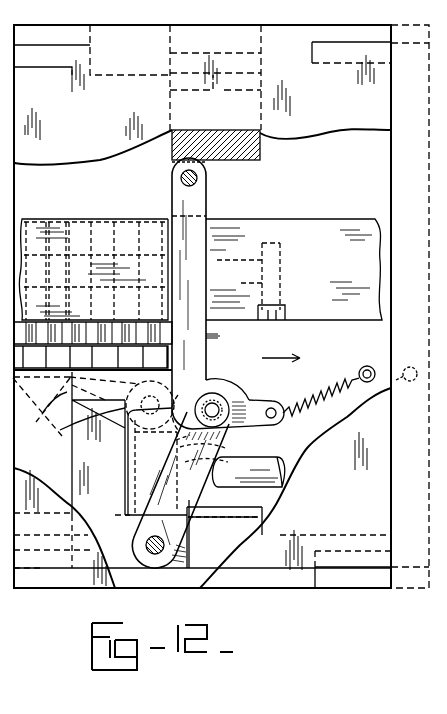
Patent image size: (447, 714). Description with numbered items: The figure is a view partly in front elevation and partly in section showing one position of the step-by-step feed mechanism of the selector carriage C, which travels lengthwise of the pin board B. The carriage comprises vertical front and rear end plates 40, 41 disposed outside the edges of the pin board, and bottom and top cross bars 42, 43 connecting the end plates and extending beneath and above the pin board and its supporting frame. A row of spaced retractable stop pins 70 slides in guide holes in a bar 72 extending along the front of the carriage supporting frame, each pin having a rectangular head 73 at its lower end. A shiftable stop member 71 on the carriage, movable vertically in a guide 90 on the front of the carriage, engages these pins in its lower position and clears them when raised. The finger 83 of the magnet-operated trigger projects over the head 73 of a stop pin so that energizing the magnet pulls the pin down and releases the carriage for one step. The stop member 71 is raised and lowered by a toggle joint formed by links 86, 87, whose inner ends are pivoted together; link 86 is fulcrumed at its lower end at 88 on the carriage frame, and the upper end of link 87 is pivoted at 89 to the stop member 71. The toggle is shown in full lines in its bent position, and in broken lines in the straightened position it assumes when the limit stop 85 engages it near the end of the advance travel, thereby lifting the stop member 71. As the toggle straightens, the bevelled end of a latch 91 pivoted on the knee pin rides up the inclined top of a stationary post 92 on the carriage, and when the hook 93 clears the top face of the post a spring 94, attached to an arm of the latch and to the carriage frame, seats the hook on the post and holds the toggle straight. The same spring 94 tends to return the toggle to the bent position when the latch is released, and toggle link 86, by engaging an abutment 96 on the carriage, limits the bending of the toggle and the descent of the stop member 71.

The front end plate 40 is at (102, 160).
The rear end plate 41 is at (52, 176).
The bottom cross bar 42 is at (360, 590).
The top cross bar 43 is at (62, 42).
The stop pins 70 is at (50, 228).
The stop member 71 is at (182, 212).
The bar 72 is at (294, 269).
The head 73 is at (93, 346).
The finger 83 is at (220, 340).
The limit stop 85 is at (268, 466).
The toggle link 86 is at (228, 441).
The toggle link 87 is at (202, 282).
The fulcrum 88 is at (156, 555).
The pivot 89 is at (197, 184).
The guide 90 is at (262, 73).
The latch 91 is at (90, 398).
The post 92 is at (124, 462).
The hook 93 is at (72, 427).
The spring 94 is at (345, 376).
The abutment 96 is at (230, 392).
The pin board B is at (312, 220).
The selector carriage C is at (276, 590).